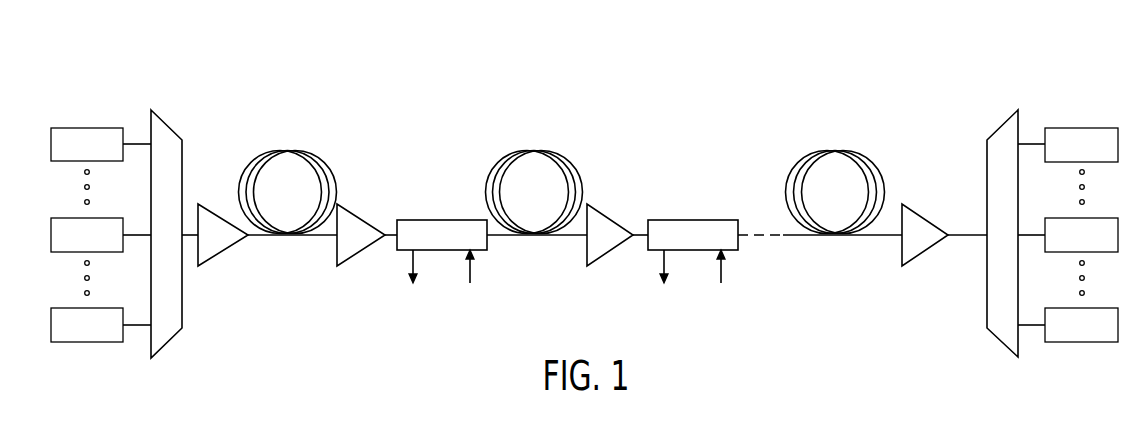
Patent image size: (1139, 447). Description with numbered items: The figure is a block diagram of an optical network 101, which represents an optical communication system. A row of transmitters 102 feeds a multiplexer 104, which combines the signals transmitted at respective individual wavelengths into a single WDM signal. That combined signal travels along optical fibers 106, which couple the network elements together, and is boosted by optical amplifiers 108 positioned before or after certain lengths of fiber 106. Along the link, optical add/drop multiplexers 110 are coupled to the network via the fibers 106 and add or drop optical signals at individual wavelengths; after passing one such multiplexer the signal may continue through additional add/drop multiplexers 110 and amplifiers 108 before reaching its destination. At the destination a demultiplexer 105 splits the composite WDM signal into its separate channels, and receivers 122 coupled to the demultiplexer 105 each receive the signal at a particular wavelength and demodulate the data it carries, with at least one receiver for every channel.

The optical network 101 is at (127, 61).
The transmitters 102 is at (74, 128).
The multiplexer 104 is at (166, 124).
The demultiplexer 105 is at (1000, 125).
The optical fibers 106 is at (283, 151).
The optical amplifiers 108 is at (220, 252).
The optical add/drop multiplexers 110 is at (431, 219).
The receivers 122 is at (1096, 128).